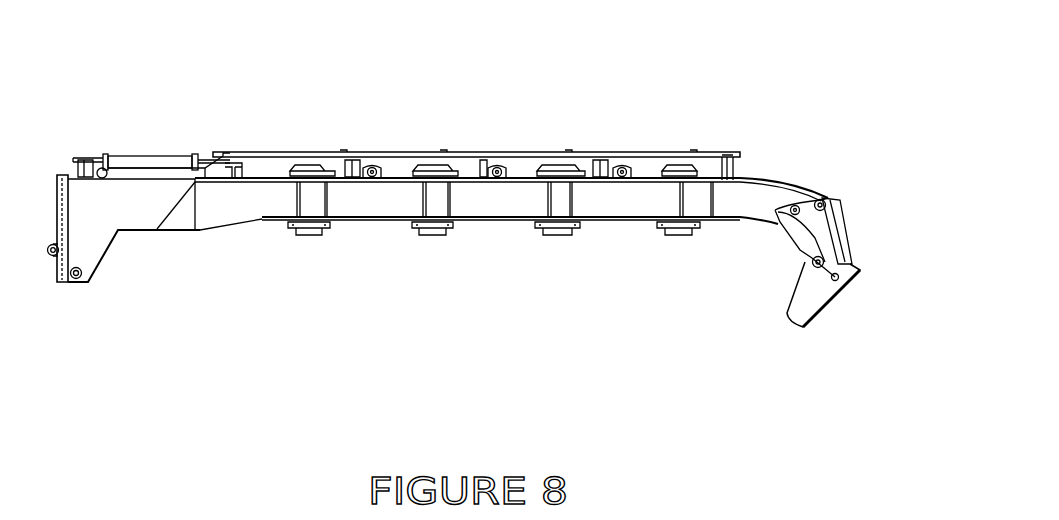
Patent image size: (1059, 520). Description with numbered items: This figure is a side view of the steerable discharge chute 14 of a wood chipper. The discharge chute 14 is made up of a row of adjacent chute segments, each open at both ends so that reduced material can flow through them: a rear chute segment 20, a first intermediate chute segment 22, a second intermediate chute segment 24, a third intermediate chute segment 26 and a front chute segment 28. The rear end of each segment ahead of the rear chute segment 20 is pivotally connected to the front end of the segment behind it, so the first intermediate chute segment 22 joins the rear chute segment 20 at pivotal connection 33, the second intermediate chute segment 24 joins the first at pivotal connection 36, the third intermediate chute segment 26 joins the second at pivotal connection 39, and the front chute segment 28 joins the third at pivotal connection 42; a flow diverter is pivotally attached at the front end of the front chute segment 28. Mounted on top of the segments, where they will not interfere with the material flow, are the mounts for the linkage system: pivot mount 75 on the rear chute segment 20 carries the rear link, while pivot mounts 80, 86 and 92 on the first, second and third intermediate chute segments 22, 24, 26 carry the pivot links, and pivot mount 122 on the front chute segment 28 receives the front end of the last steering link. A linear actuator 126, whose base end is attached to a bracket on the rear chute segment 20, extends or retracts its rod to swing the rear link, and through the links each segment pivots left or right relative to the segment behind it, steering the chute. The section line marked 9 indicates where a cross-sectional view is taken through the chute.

The discharge chute 14 is at (644, 72).
The rear chute segment 20 is at (155, 228).
The first intermediate chute segment 22 is at (335, 199).
The second intermediate chute segment 24 is at (462, 199).
The third intermediate chute segment 26 is at (588, 199).
The front chute segment 28 is at (770, 254).
The pivotal connection 33 is at (309, 240).
The pivotal connection 36 is at (434, 240).
The pivotal connection 39 is at (557, 240).
The pivotal connection 42 is at (678, 240).
The pivot mount 75 is at (250, 174).
The pivot mount 80 is at (343, 171).
The pivot mount 86 is at (493, 170).
The pivot mount 92 is at (615, 168).
The pivot mount 122 is at (738, 168).
The linear actuator 126 is at (125, 156).
The section line 9- 9 is at (432, 262).